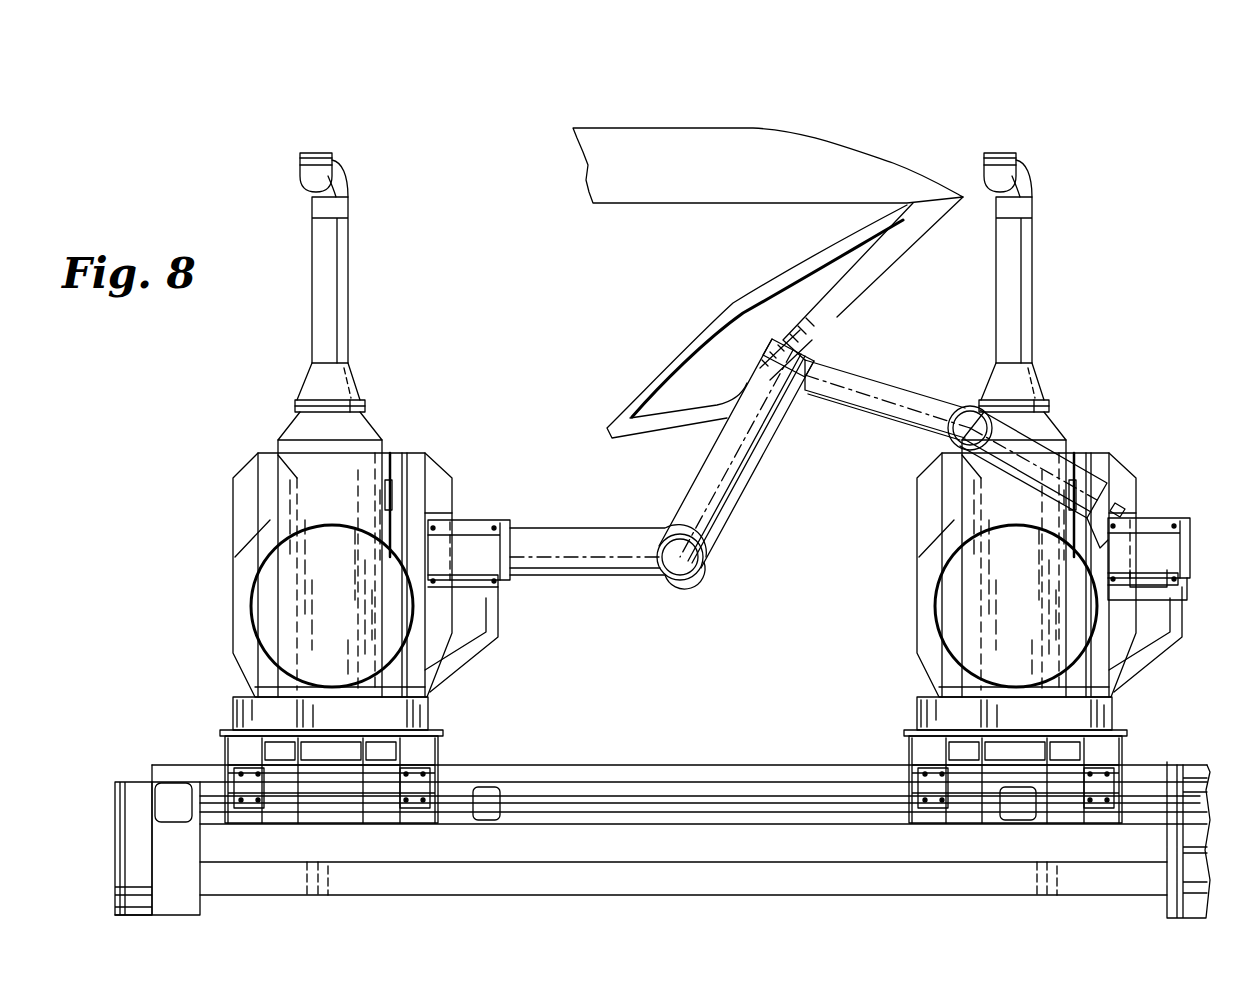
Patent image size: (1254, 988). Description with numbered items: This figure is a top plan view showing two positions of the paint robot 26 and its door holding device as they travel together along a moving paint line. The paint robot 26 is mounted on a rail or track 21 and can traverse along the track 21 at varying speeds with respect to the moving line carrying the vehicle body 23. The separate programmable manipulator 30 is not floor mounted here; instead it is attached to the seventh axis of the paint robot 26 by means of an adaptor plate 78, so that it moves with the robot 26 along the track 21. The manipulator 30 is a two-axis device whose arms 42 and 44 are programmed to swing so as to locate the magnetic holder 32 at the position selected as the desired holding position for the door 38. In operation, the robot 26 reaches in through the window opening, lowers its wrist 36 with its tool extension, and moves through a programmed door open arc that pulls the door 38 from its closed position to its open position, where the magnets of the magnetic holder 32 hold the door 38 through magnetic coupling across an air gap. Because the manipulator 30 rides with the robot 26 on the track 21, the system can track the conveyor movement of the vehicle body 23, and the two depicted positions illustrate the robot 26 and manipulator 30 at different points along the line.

The track 21 is at (1147, 763).
The vehicle body 23 is at (753, 128).
The paint robot 26 is at (348, 330).
The programmable manipulator 30 is at (617, 582).
The magnetic holder 32 is at (845, 320).
The wrist 36 is at (350, 178).
The door 38 is at (666, 362).
The arm 42 is at (560, 582).
The arm 44 is at (743, 487).
The adaptor plate 78 is at (467, 663).